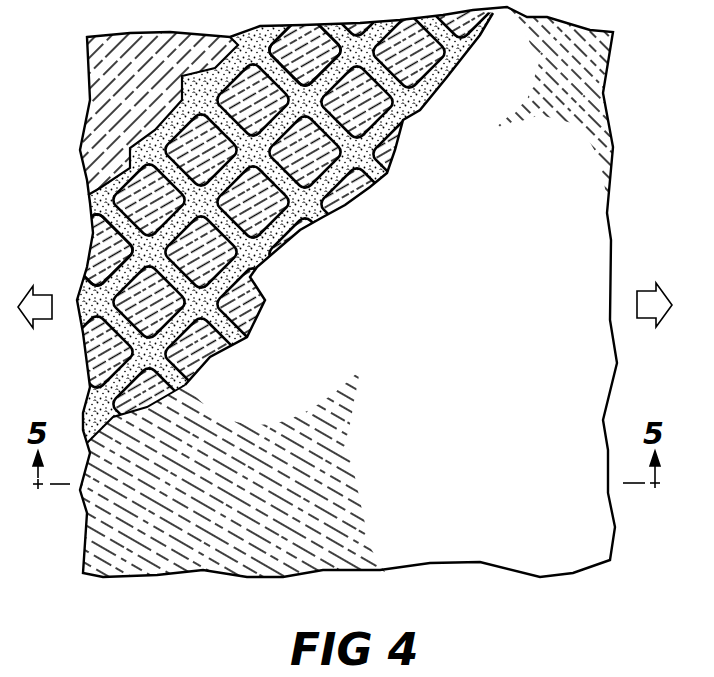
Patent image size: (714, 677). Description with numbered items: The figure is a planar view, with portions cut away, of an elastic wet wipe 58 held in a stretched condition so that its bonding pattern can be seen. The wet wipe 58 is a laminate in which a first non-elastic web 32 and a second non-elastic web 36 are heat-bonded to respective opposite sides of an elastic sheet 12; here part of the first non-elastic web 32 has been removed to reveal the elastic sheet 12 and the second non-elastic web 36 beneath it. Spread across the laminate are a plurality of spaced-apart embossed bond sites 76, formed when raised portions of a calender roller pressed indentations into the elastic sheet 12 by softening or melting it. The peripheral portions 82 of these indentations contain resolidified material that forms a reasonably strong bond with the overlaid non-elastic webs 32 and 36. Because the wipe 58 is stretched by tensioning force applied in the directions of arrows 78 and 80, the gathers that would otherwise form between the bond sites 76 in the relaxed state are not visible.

The elastic sheet 12 is at (137, 37).
The first non-elastic web 32 is at (373, 32).
The second non-elastic web 36 is at (598, 258).
The elastic wet wipe 58 is at (628, 201).
The bond sites 76 is at (397, 50).
The arrow 78 is at (35, 307).
The arrow 80 is at (654, 305).
The peripheral portions 82 is at (303, 42).